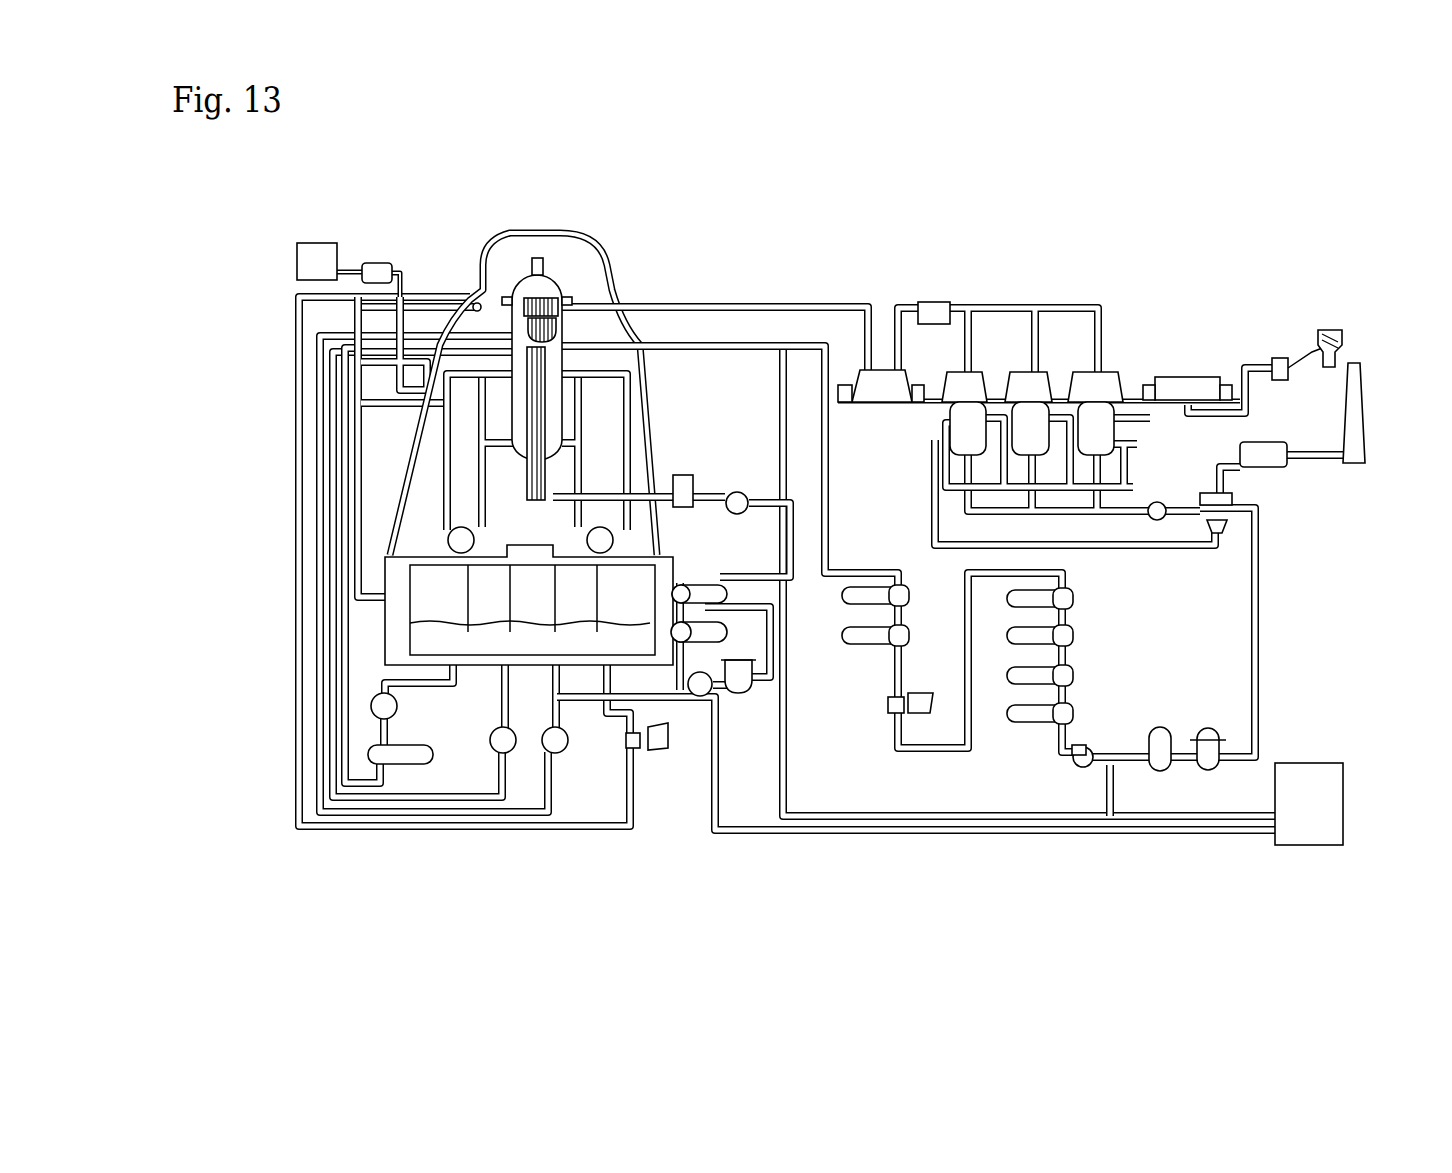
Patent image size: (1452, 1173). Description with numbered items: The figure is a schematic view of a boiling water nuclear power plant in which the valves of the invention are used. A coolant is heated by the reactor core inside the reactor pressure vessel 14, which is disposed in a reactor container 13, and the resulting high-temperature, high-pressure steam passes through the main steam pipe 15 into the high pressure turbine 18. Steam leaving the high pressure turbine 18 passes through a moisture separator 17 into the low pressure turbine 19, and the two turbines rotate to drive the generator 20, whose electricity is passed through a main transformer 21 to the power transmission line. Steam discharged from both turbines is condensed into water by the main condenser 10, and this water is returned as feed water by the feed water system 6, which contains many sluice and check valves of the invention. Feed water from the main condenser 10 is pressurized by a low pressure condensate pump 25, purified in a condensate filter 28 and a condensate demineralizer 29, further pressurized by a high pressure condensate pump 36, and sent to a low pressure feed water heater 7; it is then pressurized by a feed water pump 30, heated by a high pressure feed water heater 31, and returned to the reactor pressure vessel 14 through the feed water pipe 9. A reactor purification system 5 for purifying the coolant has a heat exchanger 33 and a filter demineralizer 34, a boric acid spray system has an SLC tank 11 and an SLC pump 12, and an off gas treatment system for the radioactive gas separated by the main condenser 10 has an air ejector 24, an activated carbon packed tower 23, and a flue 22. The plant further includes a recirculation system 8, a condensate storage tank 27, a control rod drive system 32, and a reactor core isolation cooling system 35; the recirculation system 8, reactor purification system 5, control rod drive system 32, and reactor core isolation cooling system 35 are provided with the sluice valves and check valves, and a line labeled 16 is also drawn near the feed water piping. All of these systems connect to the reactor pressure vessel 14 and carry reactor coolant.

The reactor purification system 5 is at (705, 600).
The feed water system 6 is at (903, 765).
The low pressure feed water heater 7 is at (1033, 727).
The recirculation system 8 is at (477, 355).
The feed water pipe 9 is at (838, 342).
The main condenser 10 is at (1100, 425).
The SLC tank 11 is at (317, 250).
The SLC pump 12 is at (378, 266).
The reactor container 13 is at (552, 236).
The reactor pressure vessel 14 is at (563, 276).
The main steam pipe 15 is at (750, 303).
The feed water line 16 is at (722, 360).
The moisture separator 17 is at (940, 300).
The high pressure turbine 18 is at (876, 392).
The low pressure turbine 19 is at (1003, 376).
The generator 20 is at (1193, 376).
The main transformer 21 is at (1281, 356).
The flue 22 is at (1360, 432).
The activated carbon packed tower 23 is at (1282, 468).
The air ejector 24 is at (1215, 535).
The low pressure condensate pump 25 is at (1153, 522).
The condensate storage tank 27 is at (1340, 763).
The condensate filter 28 is at (1208, 728).
The condensate demineralizer 29 is at (1150, 740).
The feed water pump 30 is at (920, 693).
The high pressure feed water heater 31 is at (912, 596).
The control rod drive system 32 is at (690, 477).
The heat exchanger 33 is at (706, 584).
The filter demineralizer 34 is at (742, 696).
The reactor core isolation cooling system 35 is at (657, 752).
The high pressure condensate pump 36 is at (1085, 768).